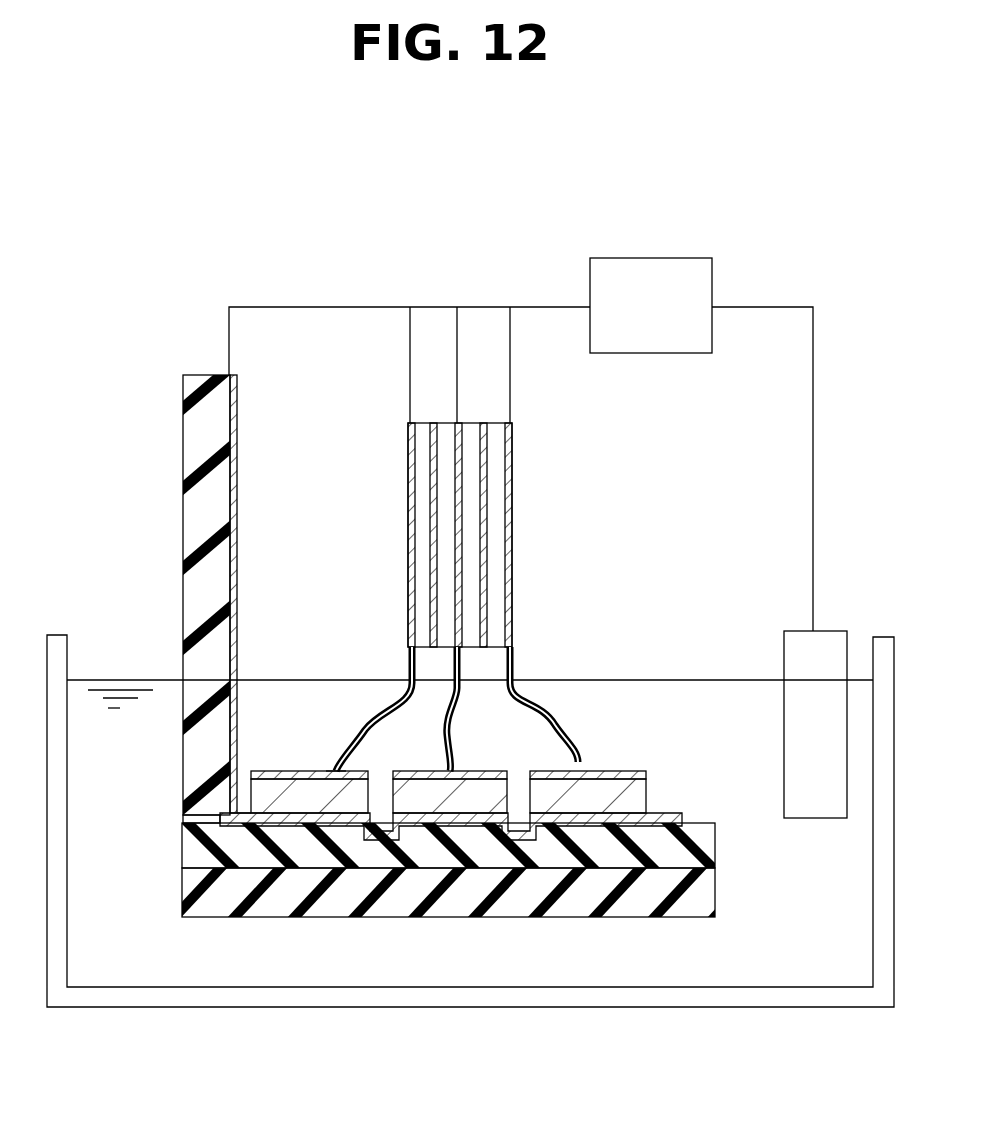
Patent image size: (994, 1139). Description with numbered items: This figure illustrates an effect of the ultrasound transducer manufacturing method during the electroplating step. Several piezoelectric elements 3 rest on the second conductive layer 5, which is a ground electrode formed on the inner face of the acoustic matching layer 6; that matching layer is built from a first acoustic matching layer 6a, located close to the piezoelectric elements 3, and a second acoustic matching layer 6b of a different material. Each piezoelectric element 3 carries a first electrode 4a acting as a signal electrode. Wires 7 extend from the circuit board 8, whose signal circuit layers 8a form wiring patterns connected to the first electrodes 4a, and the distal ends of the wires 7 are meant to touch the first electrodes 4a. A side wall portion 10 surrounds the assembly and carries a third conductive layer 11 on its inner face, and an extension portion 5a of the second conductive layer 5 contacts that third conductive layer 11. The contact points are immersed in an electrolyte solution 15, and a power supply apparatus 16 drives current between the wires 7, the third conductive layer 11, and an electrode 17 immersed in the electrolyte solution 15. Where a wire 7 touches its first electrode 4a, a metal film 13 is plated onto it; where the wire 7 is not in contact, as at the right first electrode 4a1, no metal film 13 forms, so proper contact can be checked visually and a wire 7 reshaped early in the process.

The piezoelectric element 3 is at (444, 747).
The first electrode 4a is at (296, 771).
The first electrode 4a1 is at (605, 771).
The second conductive layer 5 is at (405, 804).
The extension portion 5a is at (215, 818).
The acoustic matching layer 6 is at (423, 870).
The first acoustic matching layer 6a is at (185, 851).
The second acoustic matching layer 6b is at (443, 892).
The wire 7 is at (386, 702).
The circuit board 8 is at (430, 520).
The signal circuit layer 8a is at (505, 505).
The side wall portion 10 is at (204, 587).
The third conductive layer 11 is at (237, 530).
The metal film 13 is at (325, 771).
The electrolyte solution 15 is at (118, 680).
The power supply apparatus 16 is at (671, 258).
The electrode 17 is at (833, 631).